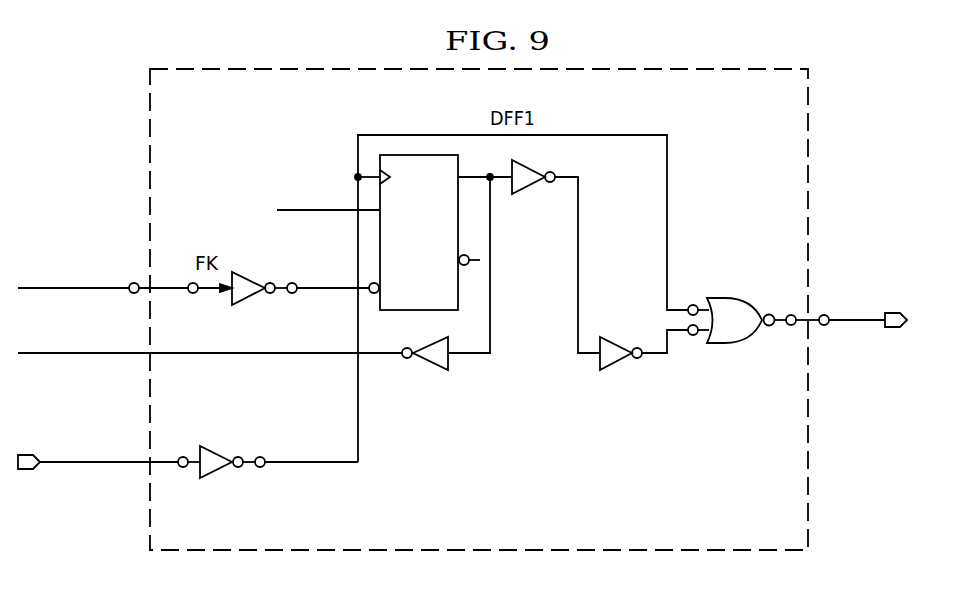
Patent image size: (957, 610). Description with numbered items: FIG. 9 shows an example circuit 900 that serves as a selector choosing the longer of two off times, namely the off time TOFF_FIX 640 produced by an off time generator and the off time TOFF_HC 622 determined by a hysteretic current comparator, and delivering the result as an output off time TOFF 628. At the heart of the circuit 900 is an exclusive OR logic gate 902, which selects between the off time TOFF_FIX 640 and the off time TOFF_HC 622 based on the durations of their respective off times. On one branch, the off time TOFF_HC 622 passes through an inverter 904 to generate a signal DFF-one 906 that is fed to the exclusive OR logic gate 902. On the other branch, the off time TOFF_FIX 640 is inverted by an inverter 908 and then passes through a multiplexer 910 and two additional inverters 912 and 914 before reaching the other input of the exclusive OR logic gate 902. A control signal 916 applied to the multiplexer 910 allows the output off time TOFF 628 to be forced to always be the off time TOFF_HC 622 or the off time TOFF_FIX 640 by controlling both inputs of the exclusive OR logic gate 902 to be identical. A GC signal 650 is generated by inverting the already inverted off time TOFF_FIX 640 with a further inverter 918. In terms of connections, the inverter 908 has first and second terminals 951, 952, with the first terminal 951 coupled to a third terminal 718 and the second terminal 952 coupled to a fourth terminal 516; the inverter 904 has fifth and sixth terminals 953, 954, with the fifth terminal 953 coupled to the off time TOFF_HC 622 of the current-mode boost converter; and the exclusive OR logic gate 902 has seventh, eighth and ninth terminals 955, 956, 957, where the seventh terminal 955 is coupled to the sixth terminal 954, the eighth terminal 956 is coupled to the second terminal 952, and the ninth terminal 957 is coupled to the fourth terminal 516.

The circuit 900 is at (356, 64).
The signal DFF1 906 is at (620, 133).
The multiplexer 910 is at (440, 250).
The inverter 912 is at (535, 190).
The inverter 914 is at (620, 365).
The inverter 918 is at (428, 360).
The inverter 908 is at (256, 299).
The inverter 904 is at (218, 455).
The exclusive OR logic gate 902 is at (728, 345).
The control signal 916 is at (277, 210).
The third terminal 718 is at (131, 283).
The first terminal 951 is at (192, 294).
The second terminal 952 is at (294, 283).
The fifth terminal 953 is at (186, 470).
The sixth terminal 954 is at (264, 470).
The seventh terminal 955 is at (698, 303).
The eighth terminal 956 is at (697, 336).
The ninth terminal 957 is at (788, 314).
The fourth terminal 516 is at (825, 327).
The off time TOFF_FIX 640 is at (45, 291).
The GC signal 650 is at (85, 358).
The off time TOFF_HC 622 is at (83, 467).
The output off time TOFF 628 is at (850, 326).